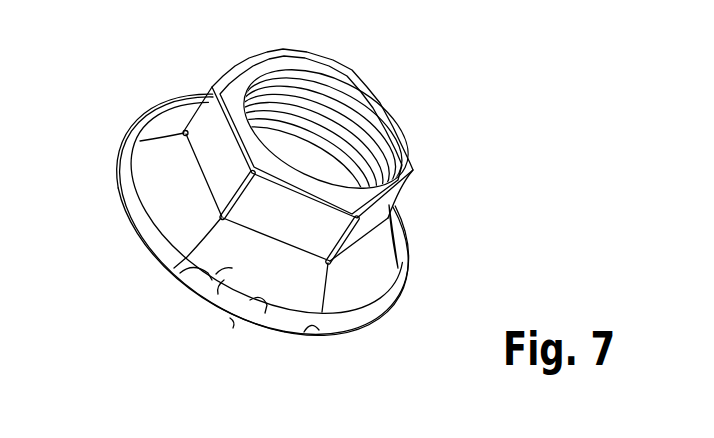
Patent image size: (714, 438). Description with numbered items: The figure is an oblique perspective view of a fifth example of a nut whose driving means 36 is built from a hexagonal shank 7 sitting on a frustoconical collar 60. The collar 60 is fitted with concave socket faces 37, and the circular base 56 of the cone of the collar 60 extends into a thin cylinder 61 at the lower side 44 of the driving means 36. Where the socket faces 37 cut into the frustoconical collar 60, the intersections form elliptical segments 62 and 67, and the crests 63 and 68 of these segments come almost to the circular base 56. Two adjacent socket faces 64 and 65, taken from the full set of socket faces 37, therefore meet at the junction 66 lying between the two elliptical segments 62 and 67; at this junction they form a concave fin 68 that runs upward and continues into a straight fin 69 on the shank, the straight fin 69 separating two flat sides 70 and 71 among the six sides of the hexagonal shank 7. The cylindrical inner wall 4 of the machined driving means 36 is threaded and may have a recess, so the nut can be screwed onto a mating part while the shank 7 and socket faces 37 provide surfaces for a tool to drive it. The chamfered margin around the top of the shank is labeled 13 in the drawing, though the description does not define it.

The cylindrical inner wall 4 is at (313, 96).
The hexagonal shank 7 is at (392, 198).
The chamfer of top face 13 is at (243, 80).
The driving means 36 is at (418, 113).
The concave socket faces 37 is at (366, 270).
The lower side 44 is at (130, 208).
The circular base 56 is at (317, 327).
The frustoconical collar 60 is at (343, 327).
The thin cylinder 61 is at (233, 320).
The elliptical segment 62 is at (180, 277).
The crest 63 is at (267, 303).
The socket face 64 is at (220, 283).
The socket face 65 is at (165, 213).
The junction 66 is at (165, 262).
The elliptical segment 67 is at (123, 160).
The concave fin 68 is at (123, 200).
The straight fin 69 is at (206, 98).
The flat side 70 is at (338, 255).
The flat side 71 is at (203, 105).